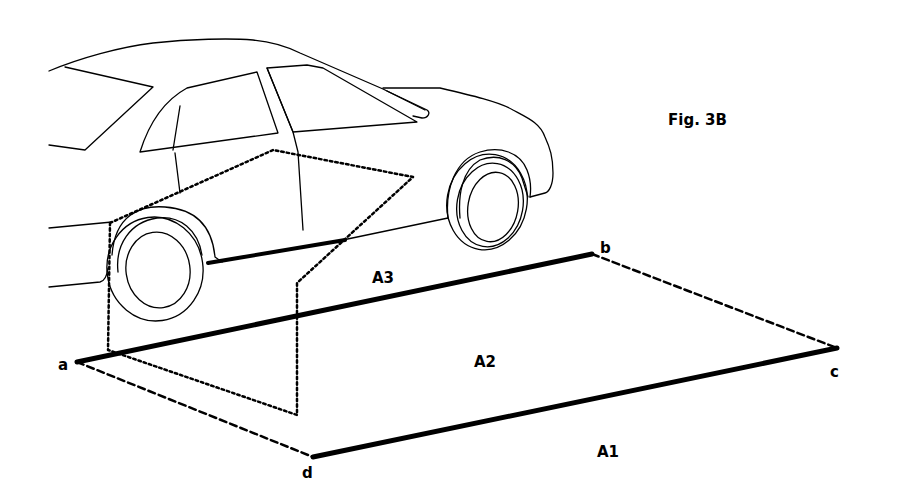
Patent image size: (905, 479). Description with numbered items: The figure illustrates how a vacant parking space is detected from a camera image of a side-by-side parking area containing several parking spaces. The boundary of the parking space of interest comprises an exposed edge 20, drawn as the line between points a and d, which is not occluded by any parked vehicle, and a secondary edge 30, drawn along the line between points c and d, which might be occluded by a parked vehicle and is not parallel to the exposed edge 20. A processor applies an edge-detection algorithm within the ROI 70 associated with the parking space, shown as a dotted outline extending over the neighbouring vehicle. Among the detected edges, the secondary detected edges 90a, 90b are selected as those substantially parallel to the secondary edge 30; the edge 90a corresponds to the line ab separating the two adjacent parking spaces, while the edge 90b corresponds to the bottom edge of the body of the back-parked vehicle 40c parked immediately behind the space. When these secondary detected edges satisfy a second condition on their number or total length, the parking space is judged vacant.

The back-parked vehicle 40c is at (342, 98).
The secondary detected edge 90b is at (258, 253).
The secondary detected edge 90a is at (215, 334).
The secondary edge 30 is at (457, 366).
The exposed edge 20 is at (181, 405).
The ROI 70 is at (299, 355).